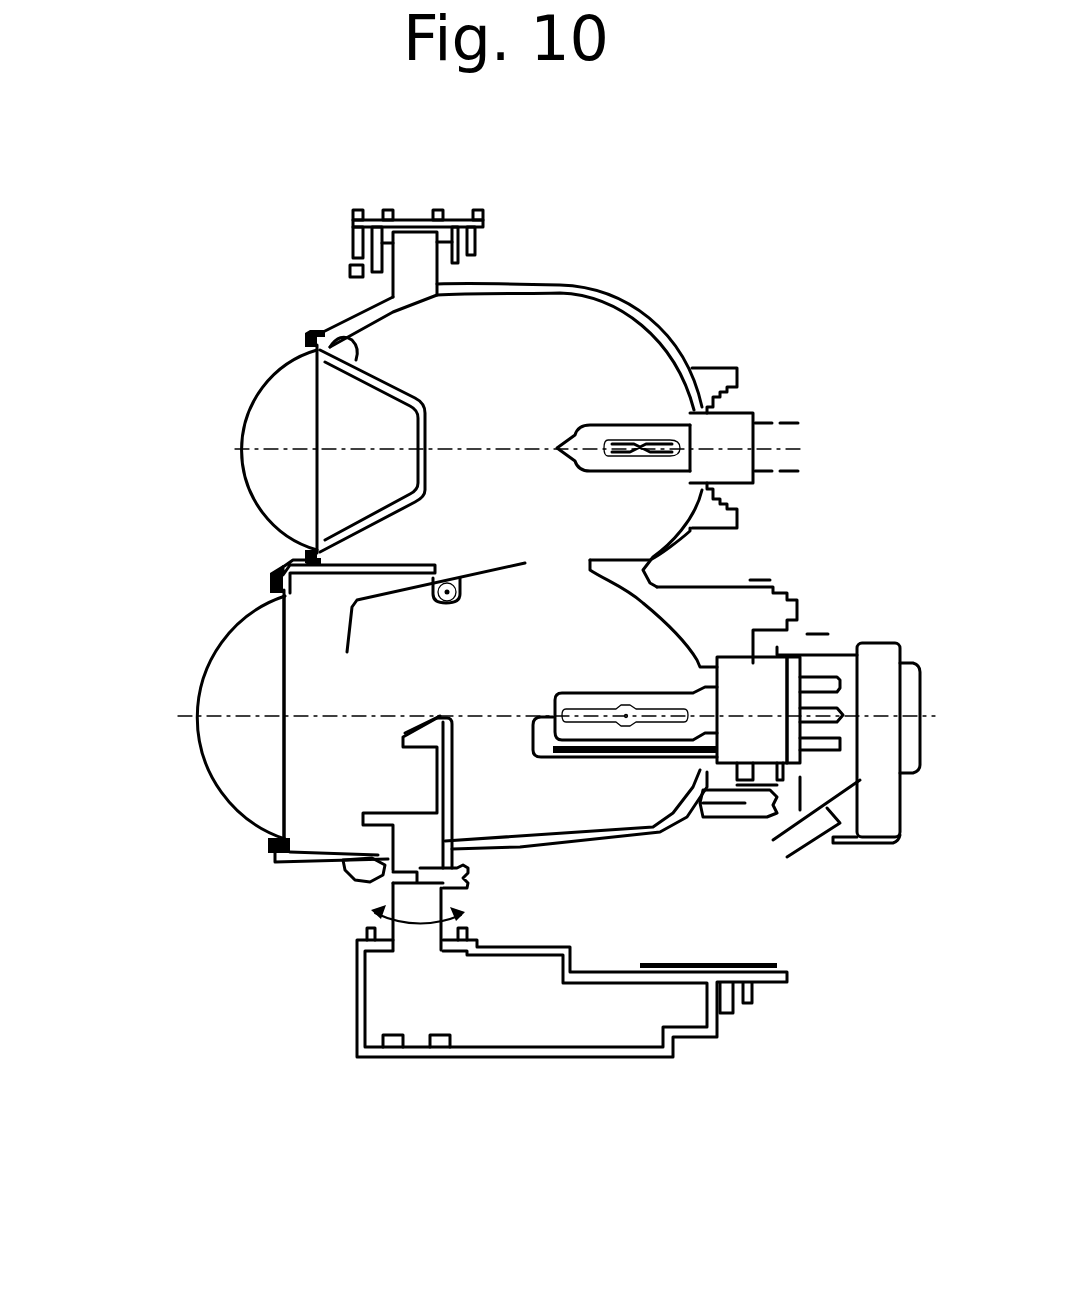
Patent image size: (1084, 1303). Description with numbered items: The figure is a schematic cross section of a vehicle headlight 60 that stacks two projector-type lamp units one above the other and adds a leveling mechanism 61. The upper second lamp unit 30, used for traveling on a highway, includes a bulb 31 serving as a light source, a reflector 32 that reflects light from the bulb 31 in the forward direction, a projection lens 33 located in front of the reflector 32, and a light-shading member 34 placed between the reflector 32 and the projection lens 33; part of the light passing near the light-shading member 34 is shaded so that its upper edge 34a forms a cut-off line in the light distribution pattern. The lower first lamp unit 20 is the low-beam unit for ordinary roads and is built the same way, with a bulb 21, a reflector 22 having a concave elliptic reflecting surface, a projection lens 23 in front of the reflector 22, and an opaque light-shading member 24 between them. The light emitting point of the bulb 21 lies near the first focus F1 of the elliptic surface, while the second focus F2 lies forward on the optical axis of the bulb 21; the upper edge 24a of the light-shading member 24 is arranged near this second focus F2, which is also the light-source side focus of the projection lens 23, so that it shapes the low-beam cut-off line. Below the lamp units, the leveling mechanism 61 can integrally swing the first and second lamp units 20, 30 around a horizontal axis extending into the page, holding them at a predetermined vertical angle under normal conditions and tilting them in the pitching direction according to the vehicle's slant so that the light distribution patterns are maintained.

The vehicle headlight 60 is at (742, 187).
The second lamp unit 30 is at (468, 383).
The bulb 31 is at (638, 423).
The reflector 32 is at (662, 330).
The projection lens 33 is at (258, 404).
The light-shading member 34 is at (283, 380).
The upper edge 34a is at (320, 372).
The first lamp unit 20 is at (498, 704).
The bulb 21 is at (665, 700).
The reflector 22 is at (587, 840).
The projection lens 23 is at (220, 640).
The light-shading member 24 is at (264, 833).
The upper edge 24a is at (438, 717).
The first focus F1 is at (633, 705).
The second focus F2 is at (438, 717).
The leveling mechanism 61 is at (485, 1030).